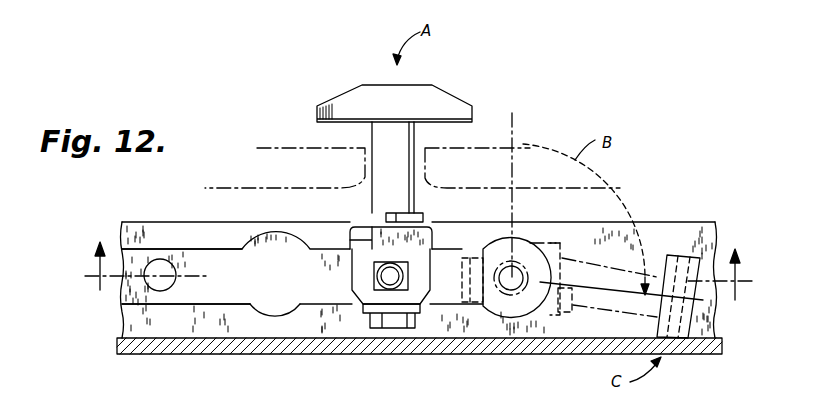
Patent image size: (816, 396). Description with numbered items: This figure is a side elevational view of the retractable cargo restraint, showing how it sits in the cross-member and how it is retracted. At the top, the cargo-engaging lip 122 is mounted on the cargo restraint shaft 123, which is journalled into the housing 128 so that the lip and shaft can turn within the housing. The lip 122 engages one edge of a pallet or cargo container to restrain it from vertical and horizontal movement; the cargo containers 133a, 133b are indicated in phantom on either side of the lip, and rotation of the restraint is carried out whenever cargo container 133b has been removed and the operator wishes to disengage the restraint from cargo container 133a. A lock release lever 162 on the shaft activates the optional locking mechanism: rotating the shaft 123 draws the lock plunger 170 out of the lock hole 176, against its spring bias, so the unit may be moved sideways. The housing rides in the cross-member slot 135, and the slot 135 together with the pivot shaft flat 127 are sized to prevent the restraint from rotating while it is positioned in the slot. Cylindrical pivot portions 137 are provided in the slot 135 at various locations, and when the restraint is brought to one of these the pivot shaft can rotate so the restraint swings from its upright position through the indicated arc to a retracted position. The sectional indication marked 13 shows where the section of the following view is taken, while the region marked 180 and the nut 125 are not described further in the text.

The section line 13- 13 is at (418, 282).
The cargo-engaging lip 122 is at (440, 100).
The cargo restraint shaft 123 is at (398, 135).
The nut 125 is at (392, 322).
The pivot shaft flat 127 is at (380, 227).
The housing 128 is at (360, 232).
The cargo container 133a is at (340, 167).
The cargo container 133b is at (457, 165).
The cross-member slot 135 is at (447, 268).
The cylindrical pivot portion 137 is at (282, 312).
The lock release lever 162 is at (398, 213).
The lock plunger 170 is at (397, 280).
The lock hole 176 is at (158, 260).
The arm 180 is at (670, 223).